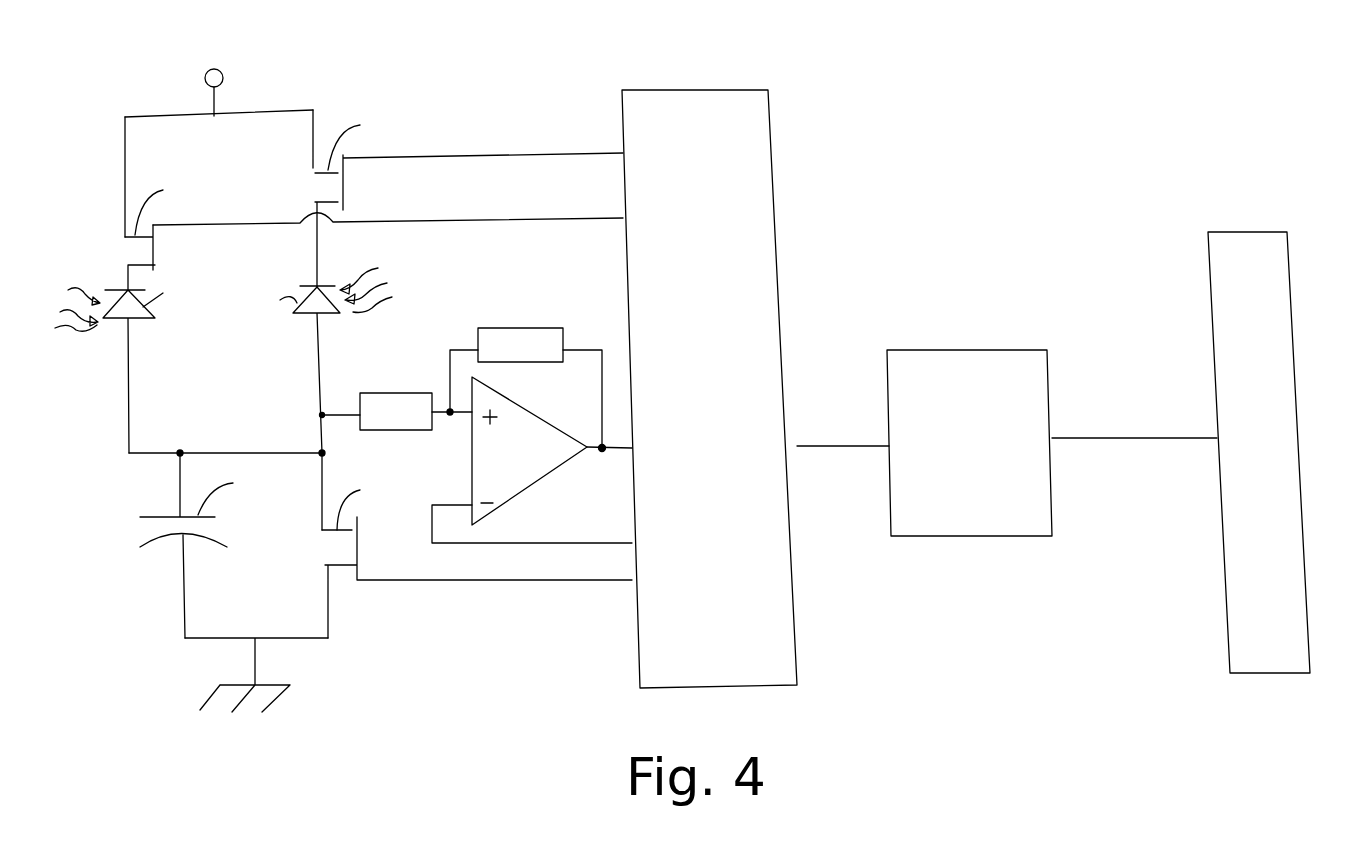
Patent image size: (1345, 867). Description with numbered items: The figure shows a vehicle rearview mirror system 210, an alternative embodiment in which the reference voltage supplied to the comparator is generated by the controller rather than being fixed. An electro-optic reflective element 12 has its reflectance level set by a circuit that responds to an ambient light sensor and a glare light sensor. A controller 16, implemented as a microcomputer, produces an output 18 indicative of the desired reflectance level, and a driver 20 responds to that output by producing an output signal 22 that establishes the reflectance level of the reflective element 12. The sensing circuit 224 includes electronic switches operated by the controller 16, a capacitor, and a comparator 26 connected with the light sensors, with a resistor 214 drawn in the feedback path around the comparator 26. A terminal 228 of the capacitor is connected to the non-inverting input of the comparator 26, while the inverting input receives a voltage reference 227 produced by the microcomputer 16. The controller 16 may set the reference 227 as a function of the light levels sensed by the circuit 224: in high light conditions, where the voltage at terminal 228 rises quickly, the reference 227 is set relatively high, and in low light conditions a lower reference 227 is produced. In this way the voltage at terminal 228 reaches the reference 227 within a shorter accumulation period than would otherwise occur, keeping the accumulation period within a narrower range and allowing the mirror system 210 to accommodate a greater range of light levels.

The electro-optic reflective element 12 is at (1227, 232).
The controller 16 is at (718, 92).
The output 18 is at (802, 445).
The driver 20 is at (982, 348).
The output signal 22 is at (1063, 440).
The comparator 26 is at (522, 408).
The vehicle rearview mirror system 210 is at (523, 374).
The feedback resistor 214 is at (575, 293).
The circuit 224 is at (317, 527).
The voltage reference 227 is at (517, 550).
The terminal 228 is at (208, 455).